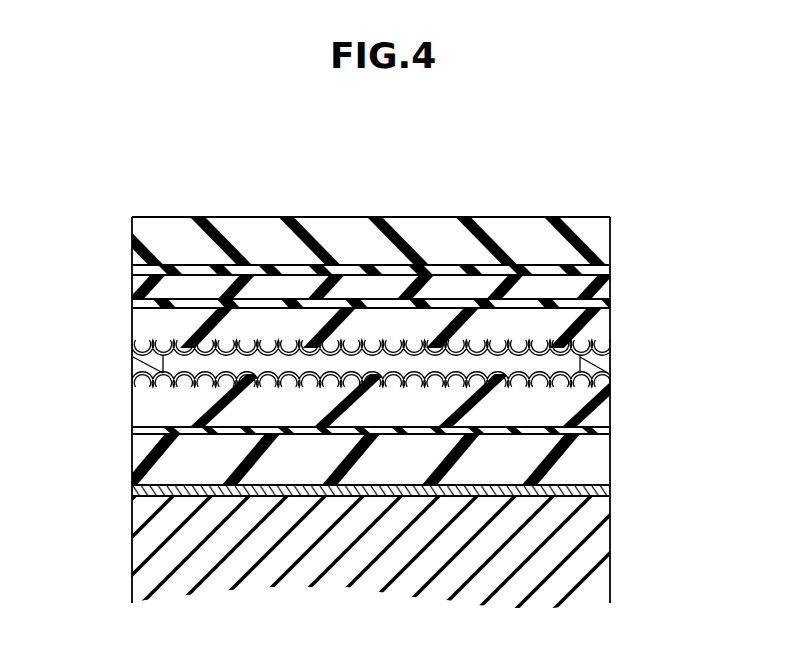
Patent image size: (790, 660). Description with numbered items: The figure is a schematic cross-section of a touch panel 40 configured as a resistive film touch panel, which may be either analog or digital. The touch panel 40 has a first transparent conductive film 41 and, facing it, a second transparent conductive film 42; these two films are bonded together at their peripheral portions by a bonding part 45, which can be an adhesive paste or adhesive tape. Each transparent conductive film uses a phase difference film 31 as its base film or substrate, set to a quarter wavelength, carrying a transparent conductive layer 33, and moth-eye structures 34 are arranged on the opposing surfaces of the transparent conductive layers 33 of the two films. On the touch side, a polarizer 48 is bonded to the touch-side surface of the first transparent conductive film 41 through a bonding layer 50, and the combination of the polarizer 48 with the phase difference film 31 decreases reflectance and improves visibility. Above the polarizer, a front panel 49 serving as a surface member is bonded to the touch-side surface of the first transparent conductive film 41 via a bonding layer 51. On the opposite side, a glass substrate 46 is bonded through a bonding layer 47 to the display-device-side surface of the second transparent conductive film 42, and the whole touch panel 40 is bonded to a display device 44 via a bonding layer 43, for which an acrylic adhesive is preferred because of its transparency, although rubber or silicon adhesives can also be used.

The touch panel 40 is at (187, 182).
The front panel 49 is at (608, 238).
The bonding layer 51 is at (608, 266).
The polarizer 48 is at (608, 276).
The bonding layer 50 is at (608, 300).
The phase difference film 31 is at (608, 305).
The transparent conductive layer 33 is at (608, 328).
The moth-eye structure 34 is at (186, 348).
The first transparent conductive film 41 is at (697, 272).
The second transparent conductive film 42 is at (697, 387).
The bonding part 45 is at (608, 355).
The bonding layer 47 is at (608, 458).
The glass substrate 46 is at (608, 491).
The bonding layer 43 is at (608, 530).
The display device 44 is at (608, 585).